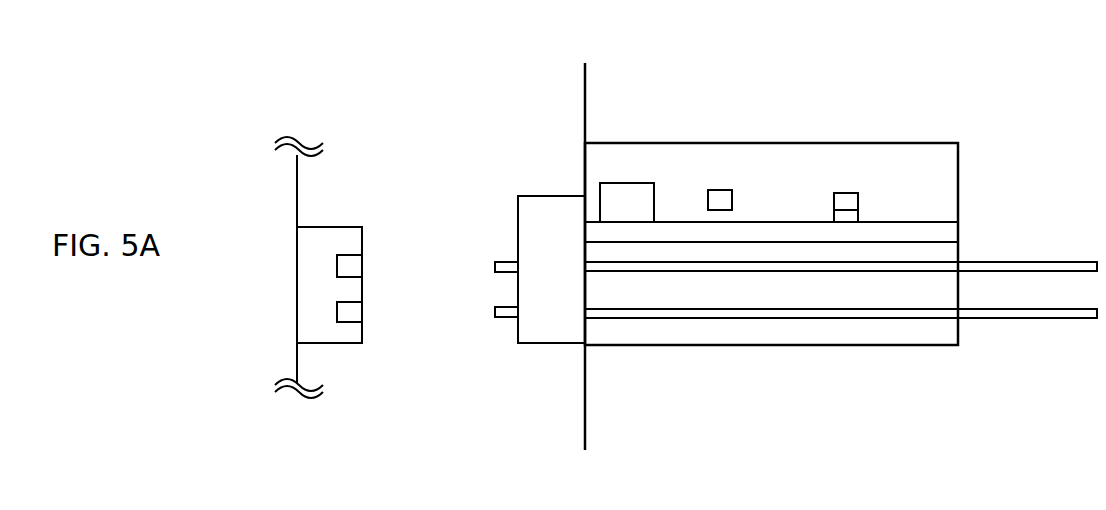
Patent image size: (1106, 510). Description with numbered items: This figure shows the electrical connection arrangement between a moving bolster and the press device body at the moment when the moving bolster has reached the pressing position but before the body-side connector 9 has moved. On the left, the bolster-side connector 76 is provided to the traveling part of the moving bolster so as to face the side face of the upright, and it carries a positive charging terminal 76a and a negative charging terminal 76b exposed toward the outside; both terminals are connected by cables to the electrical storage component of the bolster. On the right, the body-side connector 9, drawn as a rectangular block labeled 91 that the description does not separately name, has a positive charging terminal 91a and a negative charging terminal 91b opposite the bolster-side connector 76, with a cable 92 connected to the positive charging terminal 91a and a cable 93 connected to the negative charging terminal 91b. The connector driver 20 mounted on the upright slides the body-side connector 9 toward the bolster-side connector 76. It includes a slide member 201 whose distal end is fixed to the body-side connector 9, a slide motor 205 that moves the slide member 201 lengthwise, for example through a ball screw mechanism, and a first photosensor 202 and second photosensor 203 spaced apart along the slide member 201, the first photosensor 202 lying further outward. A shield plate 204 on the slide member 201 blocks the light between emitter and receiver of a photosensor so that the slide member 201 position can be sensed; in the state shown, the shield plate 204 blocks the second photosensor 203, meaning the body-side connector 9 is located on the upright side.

The body-side connector 9 is at (542, 194).
The connector housing 91 is at (550, 345).
The positive charging terminal 91a is at (505, 268).
The negative charging terminal 91b is at (500, 320).
The connector driver 20 is at (768, 203).
The slide member 201 is at (908, 235).
The first photosensor 202 is at (722, 193).
The second photosensor 203 is at (843, 203).
The shield plate 204 is at (852, 217).
The slide motor 205 is at (627, 193).
The cable 92 is at (737, 262).
The cable 93 is at (652, 317).
The bolster-side connector 76 is at (348, 333).
The positive charging terminal 76a is at (343, 262).
The negative charging terminal 76b is at (343, 306).